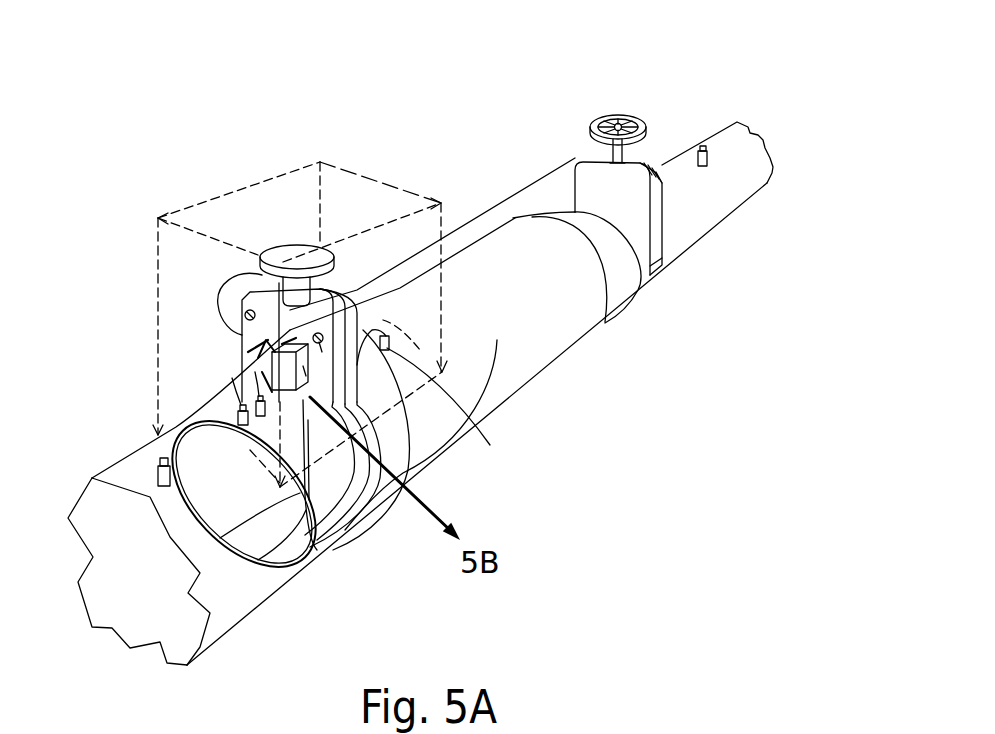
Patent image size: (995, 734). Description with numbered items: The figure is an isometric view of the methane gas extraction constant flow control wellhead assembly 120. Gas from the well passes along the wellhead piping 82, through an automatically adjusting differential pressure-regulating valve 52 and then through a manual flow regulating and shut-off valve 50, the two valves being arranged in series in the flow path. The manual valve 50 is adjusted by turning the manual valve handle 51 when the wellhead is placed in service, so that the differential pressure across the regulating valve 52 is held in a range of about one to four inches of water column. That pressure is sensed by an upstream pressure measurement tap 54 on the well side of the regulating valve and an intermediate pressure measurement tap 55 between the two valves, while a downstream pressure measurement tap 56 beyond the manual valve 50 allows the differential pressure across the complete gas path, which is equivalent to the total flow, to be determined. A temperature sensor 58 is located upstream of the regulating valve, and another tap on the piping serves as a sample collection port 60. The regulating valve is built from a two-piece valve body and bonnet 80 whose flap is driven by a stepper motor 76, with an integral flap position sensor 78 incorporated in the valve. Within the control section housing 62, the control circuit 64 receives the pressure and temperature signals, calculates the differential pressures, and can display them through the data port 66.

The methane gas extraction constant flow control wellhead assembly 120 is at (550, 340).
The manual flow regulating and shut-off valve 50 is at (578, 168).
The manual valve handle 51 is at (606, 116).
The downstream pressure measurement tap 56 is at (703, 147).
The control section housing 62 is at (175, 257).
The differential pressure regulating valve stepper motor 76 is at (290, 253).
The differential pressure regulating valve flap position sensor 78 is at (297, 332).
The data port 66 is at (333, 282).
The differential pressure-regulating valve 52 is at (250, 400).
The upstream pressure measurement tap 54 is at (250, 400).
The temperature sensor 58 is at (238, 408).
The differential pressure regulating valve body and bonnet 80 is at (215, 425).
The sample collection port 60 is at (222, 548).
The control circuit 64 is at (314, 545).
The wellhead piping 82 is at (447, 450).
The intermediate pressure measurement tap 55 is at (478, 410).